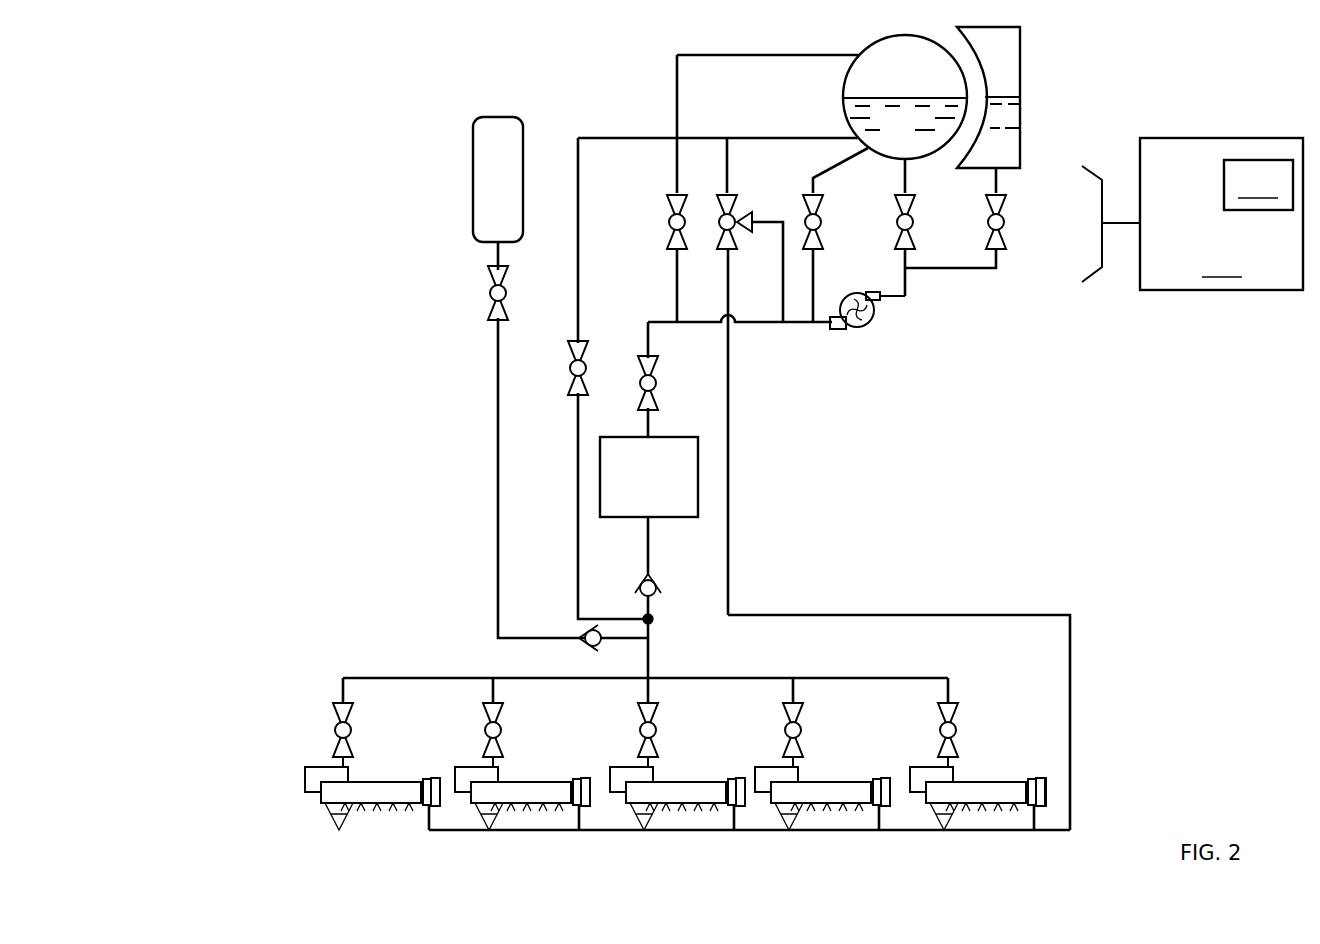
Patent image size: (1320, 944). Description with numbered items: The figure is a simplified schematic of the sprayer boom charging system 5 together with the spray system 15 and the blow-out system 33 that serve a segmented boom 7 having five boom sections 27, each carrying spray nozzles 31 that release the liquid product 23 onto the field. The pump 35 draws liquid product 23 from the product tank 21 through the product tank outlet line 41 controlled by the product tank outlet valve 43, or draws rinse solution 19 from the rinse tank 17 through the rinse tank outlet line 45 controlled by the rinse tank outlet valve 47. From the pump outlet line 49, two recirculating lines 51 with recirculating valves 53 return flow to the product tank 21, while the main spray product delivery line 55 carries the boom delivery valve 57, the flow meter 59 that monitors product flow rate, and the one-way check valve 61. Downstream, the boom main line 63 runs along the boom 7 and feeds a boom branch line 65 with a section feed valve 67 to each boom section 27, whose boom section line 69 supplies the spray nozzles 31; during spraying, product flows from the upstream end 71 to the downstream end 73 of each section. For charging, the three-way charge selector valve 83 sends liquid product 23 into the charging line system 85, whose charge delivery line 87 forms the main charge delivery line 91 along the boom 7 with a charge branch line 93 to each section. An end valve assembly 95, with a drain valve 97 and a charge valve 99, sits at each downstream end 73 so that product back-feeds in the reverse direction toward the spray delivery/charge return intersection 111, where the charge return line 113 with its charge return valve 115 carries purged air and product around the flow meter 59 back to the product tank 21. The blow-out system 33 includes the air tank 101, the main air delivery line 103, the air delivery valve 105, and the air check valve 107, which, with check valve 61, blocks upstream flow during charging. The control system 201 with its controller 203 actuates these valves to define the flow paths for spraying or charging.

The sprayer boom charging system 5 is at (360, 240).
The boom 7 is at (258, 715).
The spray system 15 is at (600, 72).
The rinse tank 17 is at (1032, 55).
The rinse solution 19 is at (1005, 102).
The product tank 21 is at (875, 42).
The liquid product 23 is at (862, 128).
The boom section 27 is at (393, 772).
The spray nozzle 31 is at (643, 832).
The blow-out system 33 is at (465, 122).
The pump 35 is at (877, 322).
The product tank outlet line 41 is at (908, 175).
The product tank outlet valve 43 is at (896, 220).
The rinse tank outlet line 45 is at (1000, 183).
The rinse tank outlet valve 47 is at (1004, 226).
The pump outlet line 49 is at (760, 325).
The recirculating line 51 is at (675, 283).
The recirculating valve 53 is at (670, 222).
The main spray product delivery line 55 is at (646, 336).
The boom delivery valve 57 is at (658, 384).
The flow meter 59 is at (678, 437).
The check valve 61 is at (660, 578).
The boom main line 63 is at (718, 678).
The boom branch line 65 is at (340, 690).
The section feed valve 67 is at (334, 731).
The boom section line 69 is at (310, 766).
The upstream end 71 is at (310, 812).
The downstream end 73 is at (407, 816).
The charge selector valve 83 is at (733, 218).
The charging line system 85 is at (762, 382).
The charge delivery line 87 is at (968, 605).
The main charge delivery line 91 is at (1074, 832).
The charge branch line 93 is at (432, 833).
The end valve assembly 95 is at (1042, 762).
The drain valve 97 is at (1048, 796).
The charge valve 99 is at (1046, 782).
The air tank 101 is at (476, 205).
The main air delivery line 103 is at (495, 252).
The air delivery valve 105 is at (488, 298).
The air check valve 107 is at (585, 635).
The spray delivery/charge return intersection 111 is at (644, 617).
The charge return line 113 is at (578, 432).
The charge return valve 115 is at (574, 372).
The control system 201 is at (1192, 214).
The controller 203 is at (1258, 185).